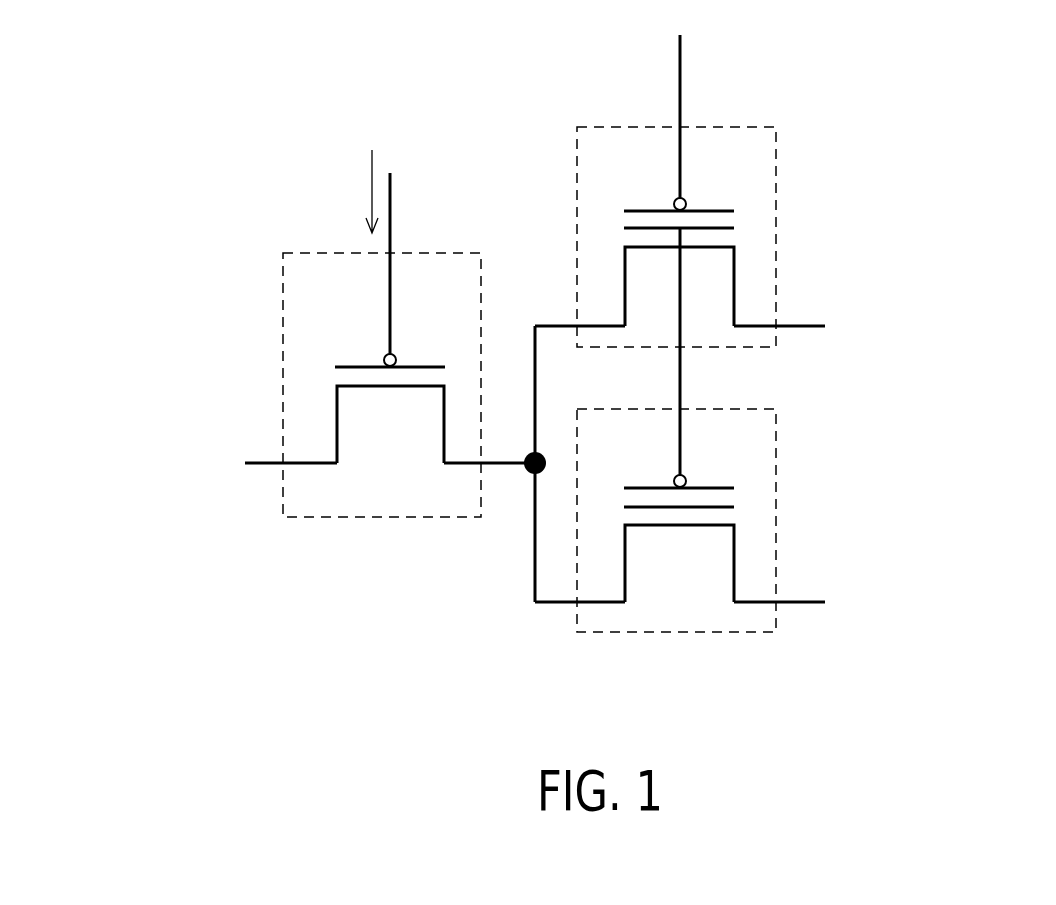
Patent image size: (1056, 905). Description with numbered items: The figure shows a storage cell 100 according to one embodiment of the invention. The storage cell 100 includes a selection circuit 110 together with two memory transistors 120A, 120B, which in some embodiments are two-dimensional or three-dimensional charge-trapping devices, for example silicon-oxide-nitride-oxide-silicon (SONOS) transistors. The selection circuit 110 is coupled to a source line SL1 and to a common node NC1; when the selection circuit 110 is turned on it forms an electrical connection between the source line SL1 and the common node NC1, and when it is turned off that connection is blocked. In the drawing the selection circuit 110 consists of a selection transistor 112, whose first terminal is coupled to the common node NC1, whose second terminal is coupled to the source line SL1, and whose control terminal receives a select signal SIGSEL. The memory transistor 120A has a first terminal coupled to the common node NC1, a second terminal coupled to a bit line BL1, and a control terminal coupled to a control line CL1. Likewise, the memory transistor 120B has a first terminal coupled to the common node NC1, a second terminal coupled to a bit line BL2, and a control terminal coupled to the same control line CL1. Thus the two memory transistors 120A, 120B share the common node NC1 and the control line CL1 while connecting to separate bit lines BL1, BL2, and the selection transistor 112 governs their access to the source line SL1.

The storage cell 100 is at (933, 103).
The selection circuit 110 is at (390, 520).
The selection transistor 112 is at (391, 412).
The memory transistor 120A is at (776, 200).
The memory transistor 120B is at (776, 483).
The select signal SIGSEL is at (373, 172).
The source line SL1 is at (262, 463).
The common node NC1 is at (525, 475).
The control line CL1 is at (681, 68).
The bit line BL1 is at (805, 323).
The bit line BL2 is at (805, 600).